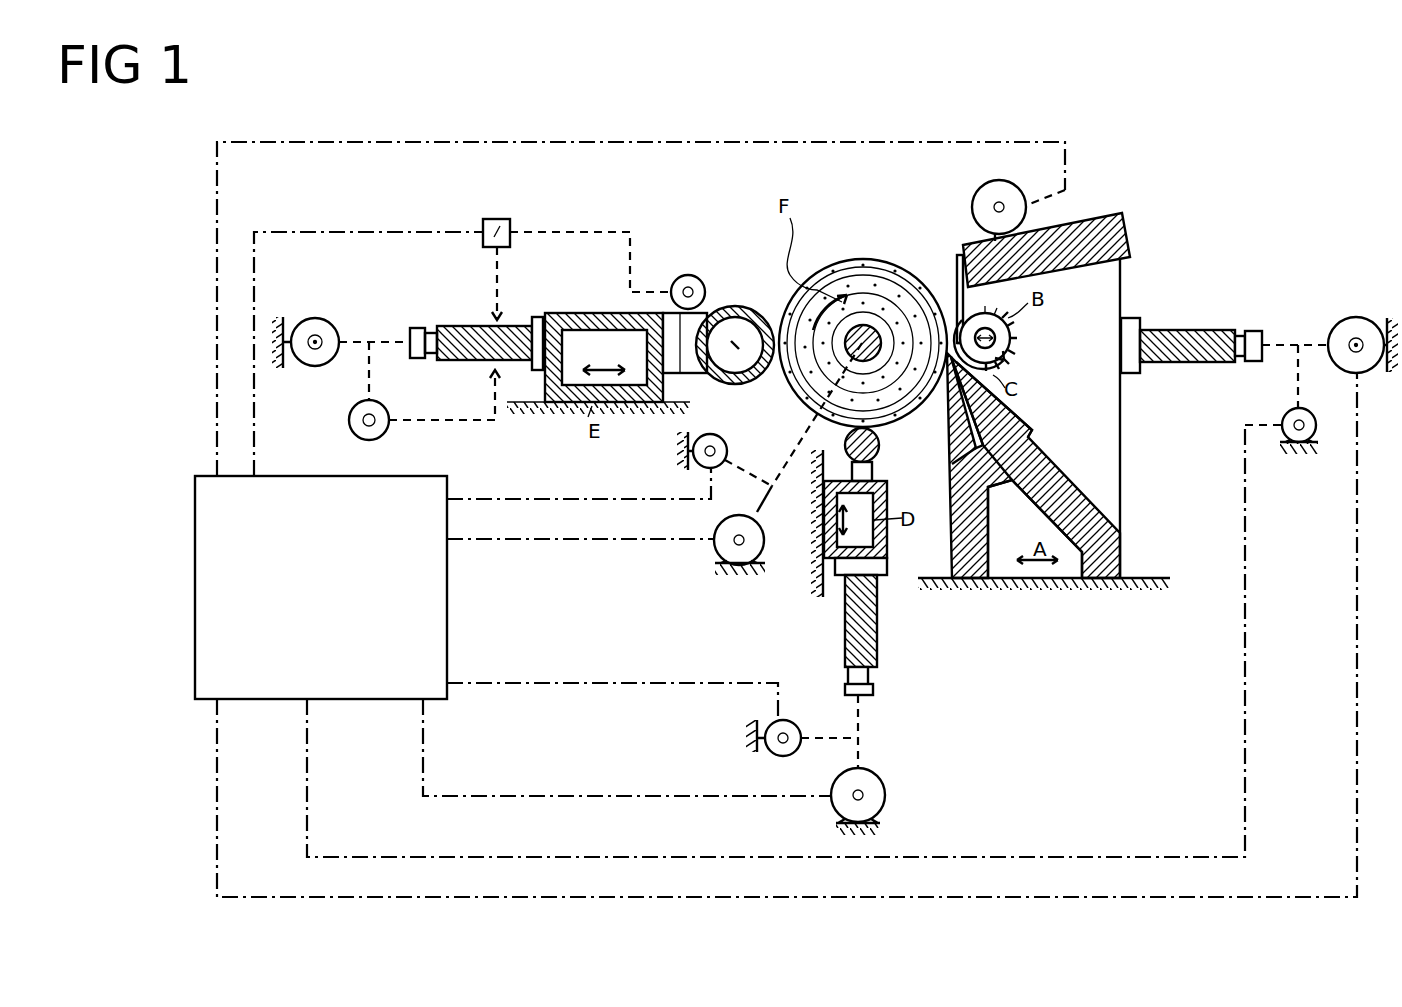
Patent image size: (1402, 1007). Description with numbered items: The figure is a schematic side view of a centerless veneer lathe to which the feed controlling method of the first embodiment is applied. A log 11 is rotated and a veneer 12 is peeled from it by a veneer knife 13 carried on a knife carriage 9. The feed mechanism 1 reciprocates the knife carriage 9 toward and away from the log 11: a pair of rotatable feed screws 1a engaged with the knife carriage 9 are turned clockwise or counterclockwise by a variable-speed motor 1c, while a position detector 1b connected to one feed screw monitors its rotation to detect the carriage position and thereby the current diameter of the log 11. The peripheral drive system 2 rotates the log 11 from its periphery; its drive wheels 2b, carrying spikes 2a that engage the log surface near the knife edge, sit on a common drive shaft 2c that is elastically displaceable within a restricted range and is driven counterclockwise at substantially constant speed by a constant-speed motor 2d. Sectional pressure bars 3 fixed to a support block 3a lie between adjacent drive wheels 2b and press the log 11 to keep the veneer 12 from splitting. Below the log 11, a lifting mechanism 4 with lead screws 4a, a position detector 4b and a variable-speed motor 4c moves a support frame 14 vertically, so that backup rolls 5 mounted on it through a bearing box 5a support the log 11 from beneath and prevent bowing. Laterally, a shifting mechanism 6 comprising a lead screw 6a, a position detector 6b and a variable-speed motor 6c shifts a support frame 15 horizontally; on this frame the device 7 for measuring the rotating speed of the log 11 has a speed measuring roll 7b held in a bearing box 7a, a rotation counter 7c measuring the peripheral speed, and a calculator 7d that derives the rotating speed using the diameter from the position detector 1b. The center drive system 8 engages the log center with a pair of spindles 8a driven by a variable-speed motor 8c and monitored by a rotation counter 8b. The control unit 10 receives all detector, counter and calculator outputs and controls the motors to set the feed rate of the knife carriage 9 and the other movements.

The feed mechanism 1 is at (1290, 310).
The feed screws 1a is at (1253, 330).
The position detector 1b is at (1277, 417).
The variable-speed motor 1c is at (1358, 327).
The peripheral drive system 2 is at (1065, 332).
The spikes 2a is at (1023, 375).
The drive wheels 2b is at (1020, 350).
The drive shaft 2c is at (1017, 335).
The constant-speed motor 2d is at (990, 198).
The sectional pressure bars 3 is at (957, 275).
The support block 3a is at (1095, 213).
The lifting mechanism 4 is at (878, 740).
The lead screws 4a is at (873, 690).
The position detector 4b is at (787, 720).
The variable-speed motor 4c is at (892, 797).
The backup rolls 5 is at (880, 445).
The bearing box 5a is at (873, 468).
The shifting mechanism 6 is at (368, 328).
The lead screw 6a is at (417, 330).
The position detector 6b is at (380, 413).
The variable-speed motor 6c is at (315, 328).
The device for measuring the rotating speed of the log 7 is at (735, 280).
The bearing box 7a is at (690, 357).
The speed measuring roll 7b is at (754, 307).
The rotation counter 7c is at (687, 280).
The calculator 7d is at (510, 230).
The center drive system 8 is at (710, 593).
The spindles 8a is at (852, 347).
The rotation counter 8b is at (707, 465).
The variable-speed motor 8c is at (728, 547).
The knife carriage 9 is at (1097, 470).
The control unit 10 is at (386, 612).
The log 11 is at (857, 280).
The veneer 12 is at (1032, 420).
The veneer knife 13 is at (1012, 480).
The support frame 14 is at (887, 557).
The support frame 15 is at (580, 317).